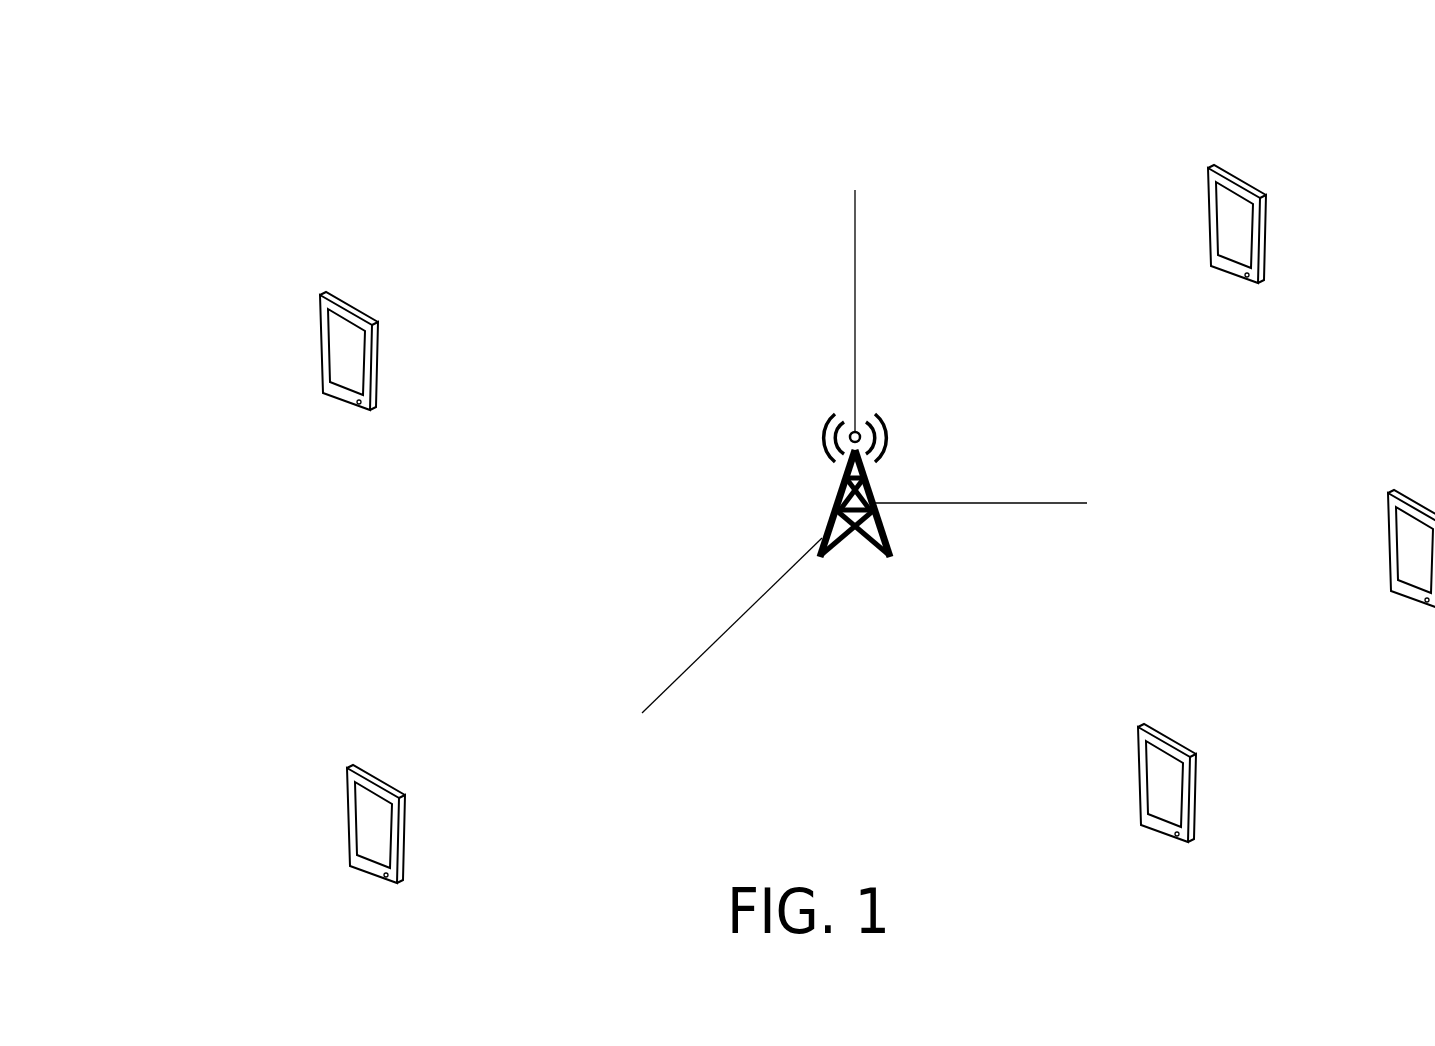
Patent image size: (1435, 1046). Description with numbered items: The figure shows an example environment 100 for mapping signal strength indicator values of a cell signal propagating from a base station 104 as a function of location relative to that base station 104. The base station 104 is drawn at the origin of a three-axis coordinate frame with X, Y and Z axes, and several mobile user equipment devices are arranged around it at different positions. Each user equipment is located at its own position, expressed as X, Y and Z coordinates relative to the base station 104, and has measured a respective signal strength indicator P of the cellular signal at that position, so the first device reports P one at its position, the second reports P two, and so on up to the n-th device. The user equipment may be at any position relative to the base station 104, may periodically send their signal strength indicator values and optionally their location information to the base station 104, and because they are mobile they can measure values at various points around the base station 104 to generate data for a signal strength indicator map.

The environment 100 is at (213, 111).
The base station 104 is at (838, 417).